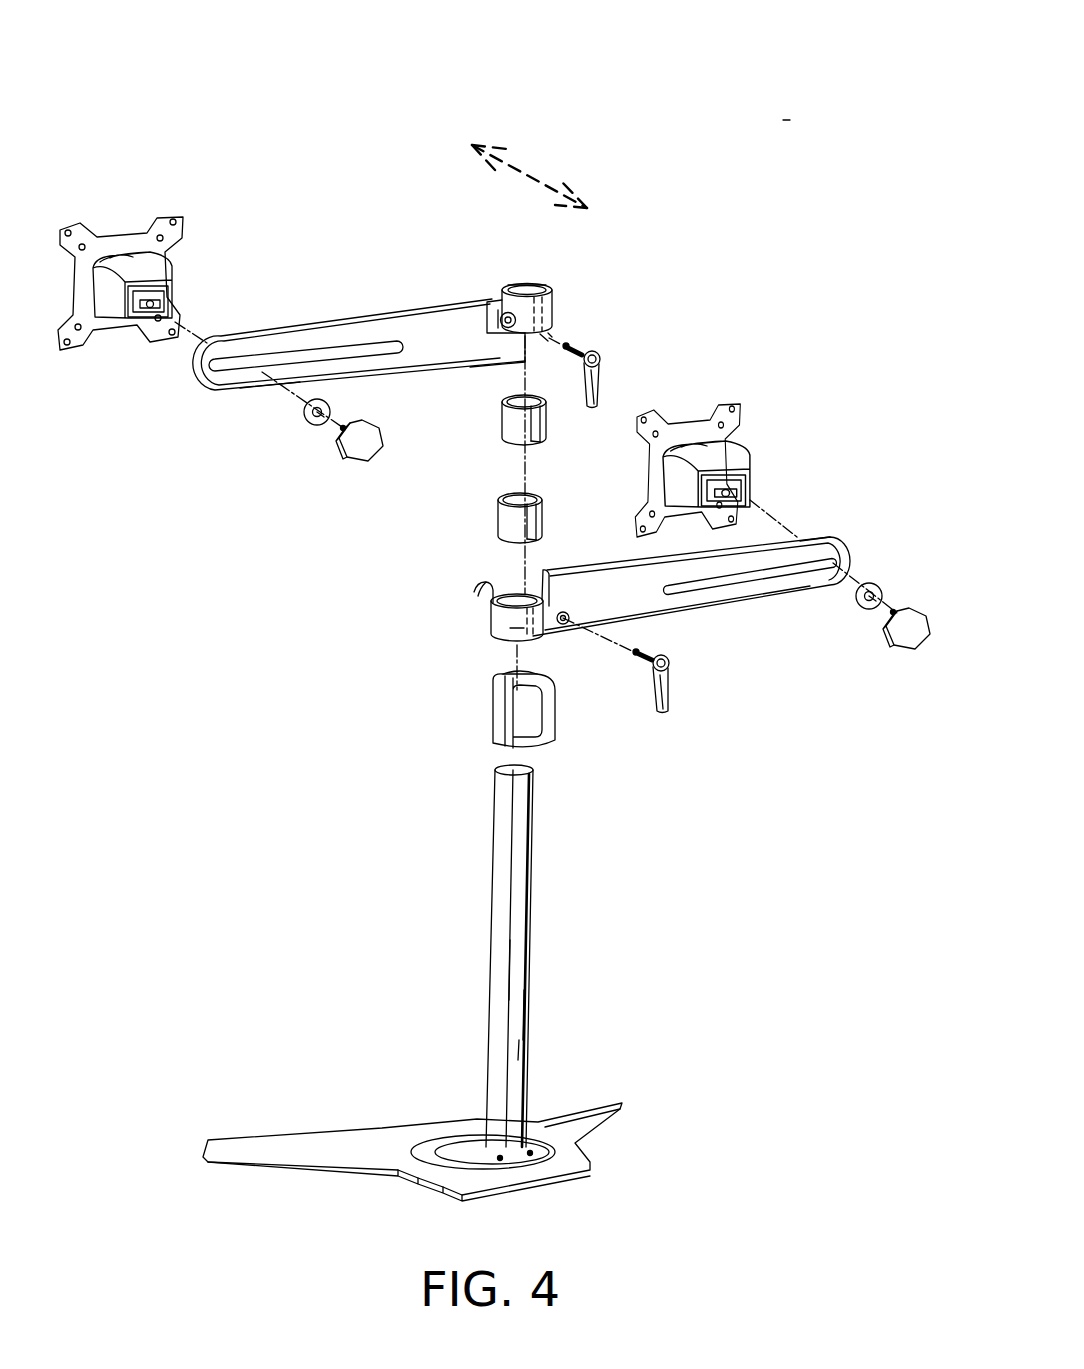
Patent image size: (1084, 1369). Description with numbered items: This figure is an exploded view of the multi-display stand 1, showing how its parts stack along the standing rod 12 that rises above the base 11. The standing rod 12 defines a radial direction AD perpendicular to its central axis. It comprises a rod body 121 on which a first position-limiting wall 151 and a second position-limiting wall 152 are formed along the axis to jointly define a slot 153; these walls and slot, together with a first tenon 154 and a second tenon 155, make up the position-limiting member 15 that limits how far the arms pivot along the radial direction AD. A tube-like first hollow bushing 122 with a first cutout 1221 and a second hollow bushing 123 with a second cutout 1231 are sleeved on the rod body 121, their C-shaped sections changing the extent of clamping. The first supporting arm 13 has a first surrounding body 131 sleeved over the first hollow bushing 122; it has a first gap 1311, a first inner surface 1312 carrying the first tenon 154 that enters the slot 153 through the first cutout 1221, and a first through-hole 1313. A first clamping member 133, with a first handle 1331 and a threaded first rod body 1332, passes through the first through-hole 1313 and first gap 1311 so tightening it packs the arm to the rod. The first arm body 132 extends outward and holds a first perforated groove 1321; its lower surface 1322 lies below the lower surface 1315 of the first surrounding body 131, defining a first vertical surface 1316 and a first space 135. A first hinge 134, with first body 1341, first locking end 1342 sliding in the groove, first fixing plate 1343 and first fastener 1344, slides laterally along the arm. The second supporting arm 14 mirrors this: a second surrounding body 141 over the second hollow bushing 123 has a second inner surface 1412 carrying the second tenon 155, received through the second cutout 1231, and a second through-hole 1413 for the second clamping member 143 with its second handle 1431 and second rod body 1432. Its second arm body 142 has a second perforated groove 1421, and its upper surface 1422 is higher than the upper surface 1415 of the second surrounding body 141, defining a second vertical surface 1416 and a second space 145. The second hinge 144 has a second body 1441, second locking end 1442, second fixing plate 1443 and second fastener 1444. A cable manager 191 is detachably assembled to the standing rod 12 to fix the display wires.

The multi-display stand 1 is at (200, 80).
The base 11 is at (338, 1197).
The standing rod 12 is at (470, 1032).
The rod body 121 is at (495, 1073).
The first hollow bushing 122 is at (512, 420).
The first cutout 1221 is at (536, 444).
The second hollow bushing 123 is at (510, 517).
The second cutout 1231 is at (536, 539).
The first supporting arm 13 is at (375, 215).
The first surrounding body 131 is at (562, 280).
The first gap 1311 is at (482, 292).
The first inner surface 1312 is at (524, 284).
The first through-hole 1313 is at (490, 325).
The lower surface of first surrounding body 1315 is at (558, 333).
The first vertical surface 1316 is at (535, 355).
The first arm body 132 is at (285, 290).
The first perforated groove 1321 is at (265, 357).
The lower surface of first arm body 1322 is at (262, 397).
The first clamping member 133 is at (612, 363).
The first handle 1331 is at (602, 385).
The first rod body 1332 is at (575, 346).
The first hinge 134 is at (118, 200).
The first body 1341 is at (104, 318).
The first locking end 1342 is at (155, 314).
The first fixing plate 1343 is at (163, 214).
The first fastener 1344 is at (372, 457).
The first space 135 is at (550, 347).
The second supporting arm 14 is at (810, 742).
The second surrounding body 141 is at (465, 595).
The second inner surface 1412 is at (493, 637).
The second through-hole 1413 is at (568, 628).
The upper surface of second surrounding body 1415 is at (474, 592).
The second vertical surface 1416 is at (540, 580).
The second arm body 142 is at (758, 617).
The second perforated groove 1421 is at (773, 577).
The upper surface of second arm body 1422 is at (806, 537).
The second clamping member 143 is at (678, 723).
The second handle 1431 is at (672, 698).
The second rod body 1432 is at (644, 650).
The second hinge 144 is at (765, 390).
The second body 1441 is at (722, 452).
The second locking end 1442 is at (750, 487).
The second fixing plate 1443 is at (735, 403).
The second fastener 1444 is at (905, 645).
The second space 145 is at (475, 582).
The position-limiting member 15 is at (805, 42).
The first position-limiting wall 151 is at (520, 1007).
The second position-limiting wall 152 is at (513, 947).
The slot 153 is at (519, 1052).
The first tenon 154 is at (554, 303).
The second tenon 155 is at (518, 632).
The cable manager 191 is at (548, 722).
The radial direction AD is at (532, 172).